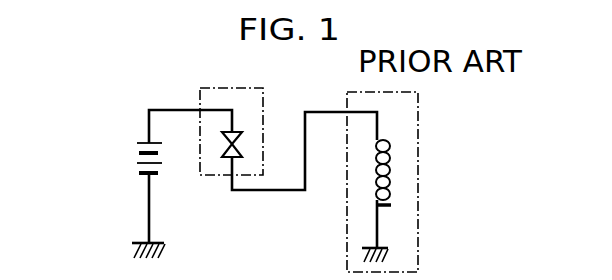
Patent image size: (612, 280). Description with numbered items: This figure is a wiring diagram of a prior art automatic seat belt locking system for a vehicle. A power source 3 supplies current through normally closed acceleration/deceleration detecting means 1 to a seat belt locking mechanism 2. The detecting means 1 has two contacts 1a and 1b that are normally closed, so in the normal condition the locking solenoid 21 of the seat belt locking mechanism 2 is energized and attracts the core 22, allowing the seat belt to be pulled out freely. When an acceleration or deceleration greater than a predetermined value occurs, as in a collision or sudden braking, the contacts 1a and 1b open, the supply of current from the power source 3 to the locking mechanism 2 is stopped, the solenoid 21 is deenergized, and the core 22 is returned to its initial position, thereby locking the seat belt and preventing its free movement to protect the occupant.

The acceleration/deceleration detecting means 1 is at (212, 88).
The contact 1a is at (235, 131).
The contact 1b is at (229, 157).
The seat belt locking mechanism 2 is at (423, 113).
The solenoid 21 is at (389, 163).
The core 22 is at (380, 208).
The power source 3 is at (135, 157).